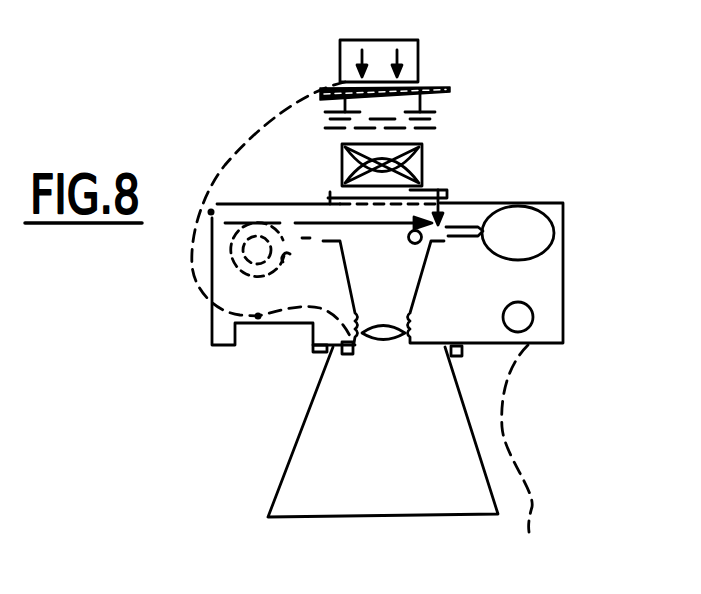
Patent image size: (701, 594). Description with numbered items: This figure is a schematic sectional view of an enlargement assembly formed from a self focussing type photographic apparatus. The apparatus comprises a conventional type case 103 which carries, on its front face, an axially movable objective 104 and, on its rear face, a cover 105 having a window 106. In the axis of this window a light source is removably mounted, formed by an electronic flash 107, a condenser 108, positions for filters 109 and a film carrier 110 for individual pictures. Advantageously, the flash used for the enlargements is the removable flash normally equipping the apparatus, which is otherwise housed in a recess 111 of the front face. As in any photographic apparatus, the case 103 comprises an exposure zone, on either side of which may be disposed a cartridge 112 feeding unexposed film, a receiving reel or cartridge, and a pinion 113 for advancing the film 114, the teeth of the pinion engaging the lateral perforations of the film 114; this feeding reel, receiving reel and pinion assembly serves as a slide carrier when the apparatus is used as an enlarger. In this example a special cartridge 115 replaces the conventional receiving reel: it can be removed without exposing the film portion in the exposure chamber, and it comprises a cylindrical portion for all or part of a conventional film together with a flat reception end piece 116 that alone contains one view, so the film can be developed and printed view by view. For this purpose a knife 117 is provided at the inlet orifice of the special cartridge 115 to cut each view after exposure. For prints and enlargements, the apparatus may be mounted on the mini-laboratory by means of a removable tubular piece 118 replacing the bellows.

The case 103 is at (563, 300).
The axially movable objective 104 is at (380, 346).
The cover 105 is at (545, 203).
The window 106 is at (337, 194).
The electronic flash 107 is at (420, 60).
The condenser 108 is at (423, 166).
The positions for filters 109 is at (438, 117).
The film carrier 110 is at (447, 200).
The recess 111 is at (262, 335).
The cartridge 112 is at (285, 264).
The pinion 113 is at (411, 244).
The film 114 is at (371, 227).
The special cartridge 115 is at (563, 233).
The flat reception end piece 116 is at (478, 240).
The knife 117 is at (478, 208).
The removable tubular piece 118 is at (298, 435).